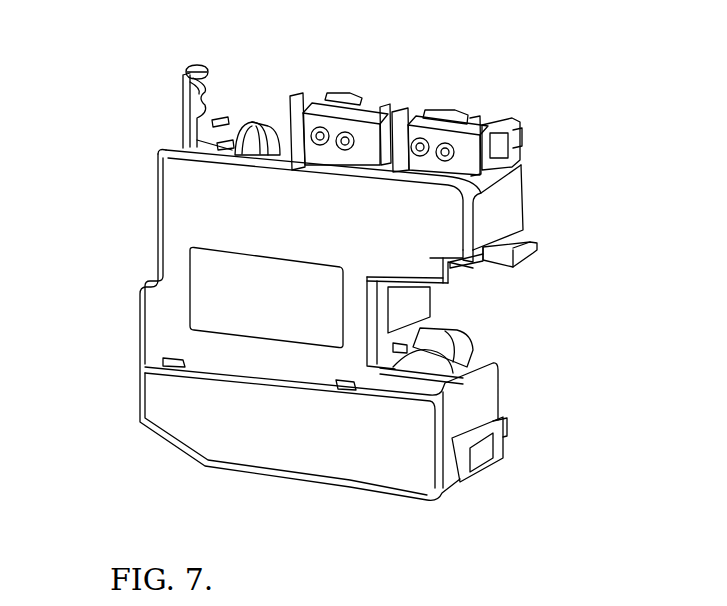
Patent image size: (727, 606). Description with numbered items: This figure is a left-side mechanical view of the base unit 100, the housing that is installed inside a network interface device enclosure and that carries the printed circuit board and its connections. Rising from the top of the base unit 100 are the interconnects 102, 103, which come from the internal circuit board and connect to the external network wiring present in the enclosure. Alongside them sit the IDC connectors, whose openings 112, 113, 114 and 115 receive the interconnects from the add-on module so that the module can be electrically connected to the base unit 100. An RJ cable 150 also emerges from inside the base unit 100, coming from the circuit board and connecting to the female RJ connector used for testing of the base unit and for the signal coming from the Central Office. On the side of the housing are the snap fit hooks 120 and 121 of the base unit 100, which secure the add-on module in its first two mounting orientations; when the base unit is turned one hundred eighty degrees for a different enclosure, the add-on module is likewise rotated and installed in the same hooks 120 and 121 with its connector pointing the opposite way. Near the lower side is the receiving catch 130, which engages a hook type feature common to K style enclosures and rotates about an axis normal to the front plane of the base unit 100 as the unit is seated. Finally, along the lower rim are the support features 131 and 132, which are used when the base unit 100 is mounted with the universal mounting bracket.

The base unit 100 is at (153, 210).
The interconnect 102 is at (185, 75).
The interconnect 103 is at (200, 63).
The RJ cable 150 is at (258, 120).
The opening 112 is at (315, 113).
The opening 113 is at (352, 122).
The opening 114 is at (423, 143).
The opening 115 is at (503, 125).
The snap fit hook 120 is at (537, 243).
The snap fit hook 121 is at (453, 333).
The receiving catch 130 is at (497, 463).
The support feature 131 is at (163, 366).
The support feature 132 is at (338, 389).